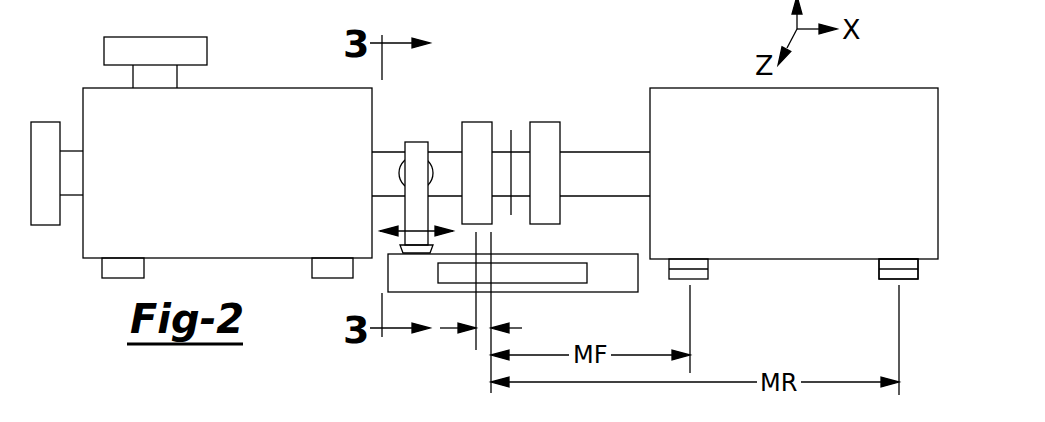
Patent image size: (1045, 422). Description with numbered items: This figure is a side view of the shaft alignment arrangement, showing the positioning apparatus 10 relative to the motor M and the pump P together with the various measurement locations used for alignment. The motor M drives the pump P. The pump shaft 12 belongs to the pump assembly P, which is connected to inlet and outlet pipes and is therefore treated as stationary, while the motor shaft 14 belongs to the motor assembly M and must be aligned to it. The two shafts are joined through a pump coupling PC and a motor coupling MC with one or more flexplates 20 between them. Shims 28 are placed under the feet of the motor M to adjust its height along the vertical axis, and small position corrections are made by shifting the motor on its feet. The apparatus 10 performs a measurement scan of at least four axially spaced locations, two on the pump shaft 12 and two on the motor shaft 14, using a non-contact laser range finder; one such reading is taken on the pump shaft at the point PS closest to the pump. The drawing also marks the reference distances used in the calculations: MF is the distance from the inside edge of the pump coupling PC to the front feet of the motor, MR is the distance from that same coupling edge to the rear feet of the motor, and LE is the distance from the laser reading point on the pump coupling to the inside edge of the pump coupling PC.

The positioning apparatus 10 is at (502, 76).
The pump shaft 12 is at (450, 152).
The motor shaft 14 is at (600, 173).
The flexplate 20 is at (511, 130).
The shims 28 is at (918, 273).
The pump P is at (201, 157).
The motor M is at (794, 173).
The pump shaft measurement point PS is at (388, 173).
The pump coupling PC is at (482, 173).
The motor coupling MC is at (550, 173).
The front feet distance MF is at (708, 265).
The rear feet distance MR is at (879, 265).
The laser-to-coupling distance LE is at (501, 312).